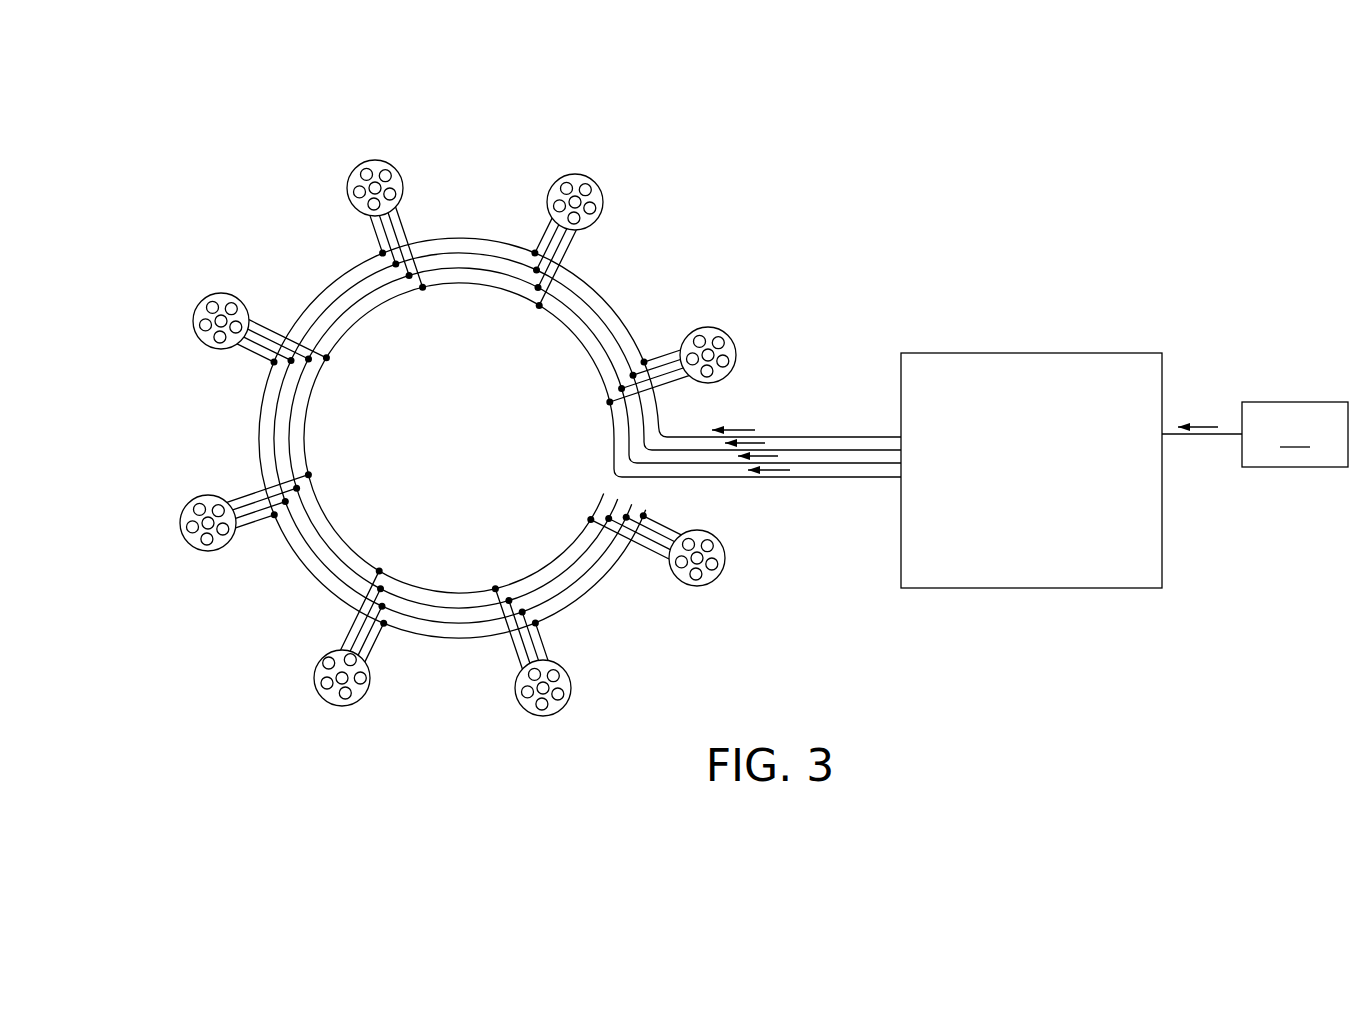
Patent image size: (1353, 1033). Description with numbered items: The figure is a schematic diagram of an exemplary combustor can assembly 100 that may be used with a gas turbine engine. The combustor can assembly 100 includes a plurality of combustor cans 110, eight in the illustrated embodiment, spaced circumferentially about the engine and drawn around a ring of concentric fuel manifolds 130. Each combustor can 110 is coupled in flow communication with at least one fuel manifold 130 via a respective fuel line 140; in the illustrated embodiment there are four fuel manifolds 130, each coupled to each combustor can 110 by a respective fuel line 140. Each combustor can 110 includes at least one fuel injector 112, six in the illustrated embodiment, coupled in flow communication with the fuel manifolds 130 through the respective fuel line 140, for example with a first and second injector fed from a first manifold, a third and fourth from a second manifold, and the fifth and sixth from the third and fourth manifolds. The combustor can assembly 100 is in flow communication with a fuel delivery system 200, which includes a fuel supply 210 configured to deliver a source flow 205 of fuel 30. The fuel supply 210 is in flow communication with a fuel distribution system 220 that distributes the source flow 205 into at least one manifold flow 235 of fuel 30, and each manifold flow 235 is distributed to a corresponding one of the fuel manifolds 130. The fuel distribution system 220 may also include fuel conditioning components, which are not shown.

The combustor can assembly 100 is at (263, 196).
The combustor can 110 is at (351, 172).
The fuel injector 112 is at (328, 697).
The fuel manifold 130 is at (496, 283).
The fuel line 140 is at (275, 328).
The fuel delivery system 200 is at (1065, 300).
The source flow 205 is at (1203, 425).
The fuel supply 210 is at (1270, 401).
The fuel distribution system 220 is at (950, 353).
The manifold flow 235 is at (803, 477).
The fuel 30 is at (1294, 432).